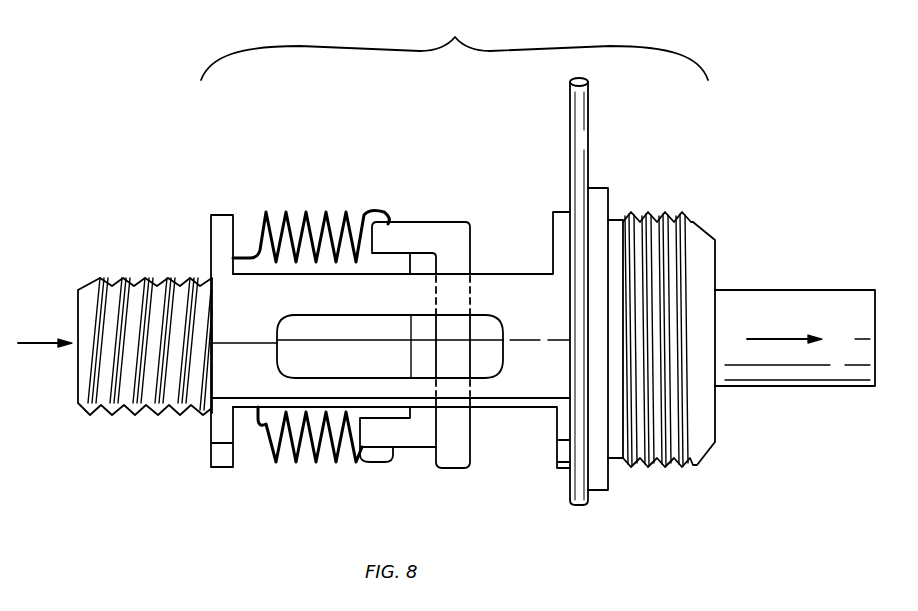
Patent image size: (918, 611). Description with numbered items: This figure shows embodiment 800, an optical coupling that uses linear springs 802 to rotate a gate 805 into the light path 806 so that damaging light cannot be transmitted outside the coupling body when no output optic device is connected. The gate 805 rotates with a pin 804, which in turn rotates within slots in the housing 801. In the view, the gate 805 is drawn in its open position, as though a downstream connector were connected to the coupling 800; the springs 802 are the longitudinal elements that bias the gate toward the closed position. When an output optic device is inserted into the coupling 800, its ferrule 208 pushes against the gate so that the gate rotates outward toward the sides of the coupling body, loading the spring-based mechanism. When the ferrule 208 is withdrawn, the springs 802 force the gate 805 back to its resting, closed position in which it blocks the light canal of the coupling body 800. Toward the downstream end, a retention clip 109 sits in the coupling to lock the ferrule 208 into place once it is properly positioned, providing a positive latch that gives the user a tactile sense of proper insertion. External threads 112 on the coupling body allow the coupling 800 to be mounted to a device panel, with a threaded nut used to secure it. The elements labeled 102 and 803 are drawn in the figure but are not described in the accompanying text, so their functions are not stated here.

The coupling 800 is at (454, 46).
The threaded rod 102 is at (148, 277).
The housing 801 is at (218, 213).
The linear springs 802 is at (300, 208).
The bracket 803 is at (395, 218).
The pin 804 is at (455, 465).
The gate 805 is at (423, 350).
The light path 806 is at (310, 360).
The retention clip 109 is at (570, 88).
The threads 112 is at (660, 212).
The ferrule 208 is at (795, 388).